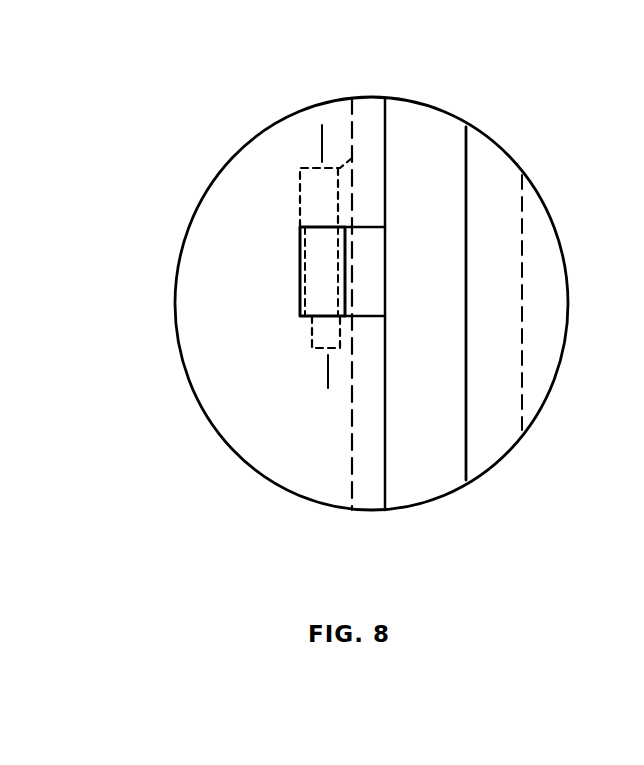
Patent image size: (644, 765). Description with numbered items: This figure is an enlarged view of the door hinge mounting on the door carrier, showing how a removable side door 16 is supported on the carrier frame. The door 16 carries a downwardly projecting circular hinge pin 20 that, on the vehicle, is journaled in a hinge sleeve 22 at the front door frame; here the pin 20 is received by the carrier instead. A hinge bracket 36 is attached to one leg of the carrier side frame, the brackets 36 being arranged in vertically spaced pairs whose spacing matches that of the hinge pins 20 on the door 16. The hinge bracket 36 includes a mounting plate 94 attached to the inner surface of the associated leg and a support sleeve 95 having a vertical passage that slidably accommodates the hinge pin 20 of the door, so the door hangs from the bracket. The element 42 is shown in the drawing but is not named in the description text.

The removable side door 16 is at (407, 312).
The upper section 42 is at (506, 253).
The mounting plate 94 is at (370, 267).
The hinge sleeve 22 is at (298, 187).
The hinge bracket 36 is at (298, 258).
The support sleeve 95 is at (298, 280).
The hinge pin 20 is at (323, 332).